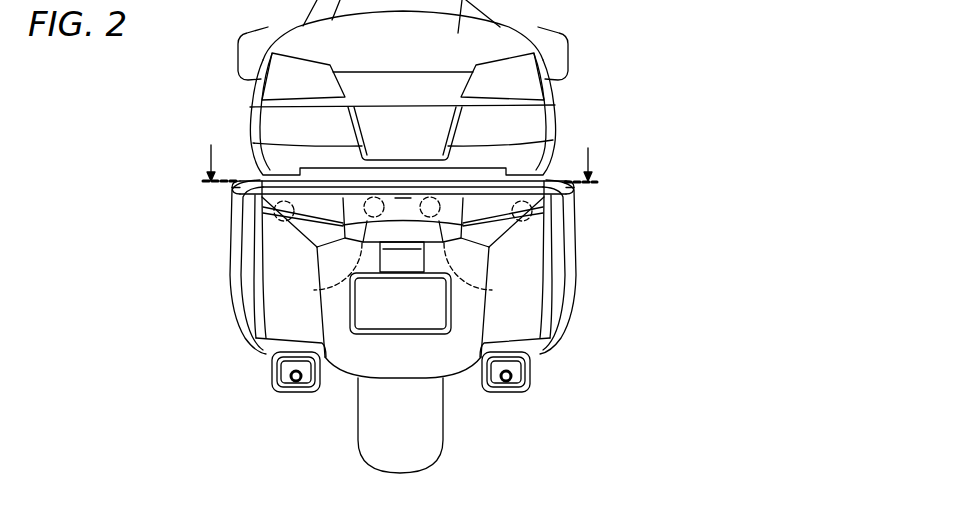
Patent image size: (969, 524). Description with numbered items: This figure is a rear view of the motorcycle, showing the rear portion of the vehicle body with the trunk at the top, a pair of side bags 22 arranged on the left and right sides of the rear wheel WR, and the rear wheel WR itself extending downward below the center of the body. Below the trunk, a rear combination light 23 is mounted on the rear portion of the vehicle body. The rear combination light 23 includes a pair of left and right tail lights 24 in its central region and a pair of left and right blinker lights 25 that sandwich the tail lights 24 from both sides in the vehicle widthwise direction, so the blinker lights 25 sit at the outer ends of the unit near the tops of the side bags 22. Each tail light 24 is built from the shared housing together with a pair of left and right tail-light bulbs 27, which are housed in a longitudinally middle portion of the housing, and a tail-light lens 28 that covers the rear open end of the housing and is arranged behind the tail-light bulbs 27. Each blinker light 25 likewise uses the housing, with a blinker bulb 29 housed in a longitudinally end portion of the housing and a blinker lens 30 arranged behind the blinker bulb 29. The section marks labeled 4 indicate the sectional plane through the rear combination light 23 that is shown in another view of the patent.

The section line 4- 4 is at (401, 158).
The side bags 22 is at (232, 286).
The rear combination light 23 is at (514, 244).
The tail lights 24 is at (361, 188).
The blinker lights 25 is at (264, 186).
The tail-light bulbs 27 is at (404, 274).
The tail-light lens 28 is at (404, 203).
The blinker bulb 29 is at (283, 222).
The blinker lens 30 is at (303, 231).
The rear wheel WR is at (420, 460).